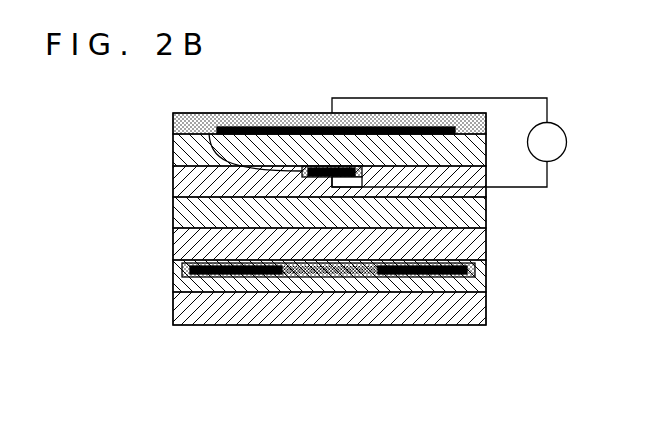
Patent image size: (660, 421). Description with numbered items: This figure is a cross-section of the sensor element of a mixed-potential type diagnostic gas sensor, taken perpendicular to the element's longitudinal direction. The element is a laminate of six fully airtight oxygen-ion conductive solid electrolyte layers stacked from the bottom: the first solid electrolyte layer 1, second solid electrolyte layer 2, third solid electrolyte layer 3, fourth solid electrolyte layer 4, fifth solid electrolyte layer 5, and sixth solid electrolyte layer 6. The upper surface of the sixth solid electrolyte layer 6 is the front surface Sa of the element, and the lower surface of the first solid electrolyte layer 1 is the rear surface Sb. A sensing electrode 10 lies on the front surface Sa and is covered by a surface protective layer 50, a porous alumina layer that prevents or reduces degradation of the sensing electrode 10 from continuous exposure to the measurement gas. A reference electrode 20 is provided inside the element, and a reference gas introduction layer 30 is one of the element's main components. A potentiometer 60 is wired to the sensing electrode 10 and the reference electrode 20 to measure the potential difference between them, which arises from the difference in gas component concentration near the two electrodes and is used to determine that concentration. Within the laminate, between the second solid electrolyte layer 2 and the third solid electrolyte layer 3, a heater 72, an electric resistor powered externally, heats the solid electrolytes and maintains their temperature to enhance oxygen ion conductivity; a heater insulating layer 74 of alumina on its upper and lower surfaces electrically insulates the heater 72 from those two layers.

The first solid electrolyte layer 1 is at (177, 315).
The second solid electrolyte layer 2 is at (177, 283).
The third solid electrolyte layer 3 is at (177, 247).
The fourth solid electrolyte layer 4 is at (177, 215).
The fifth solid electrolyte layer 5 is at (177, 182).
The sixth solid electrolyte layer 6 is at (177, 154).
The sensing electrode 10 is at (262, 127).
The reference electrode 20 is at (320, 166).
The reference gas introduction layer 30 is at (209, 134).
The surface protective layer 50 is at (176, 118).
The potentiometer 60 is at (561, 129).
The heater 72 is at (240, 277).
The heater insulating layer 74 is at (312, 277).
The front surface Sa is at (193, 132).
The rear surface Sb is at (476, 333).